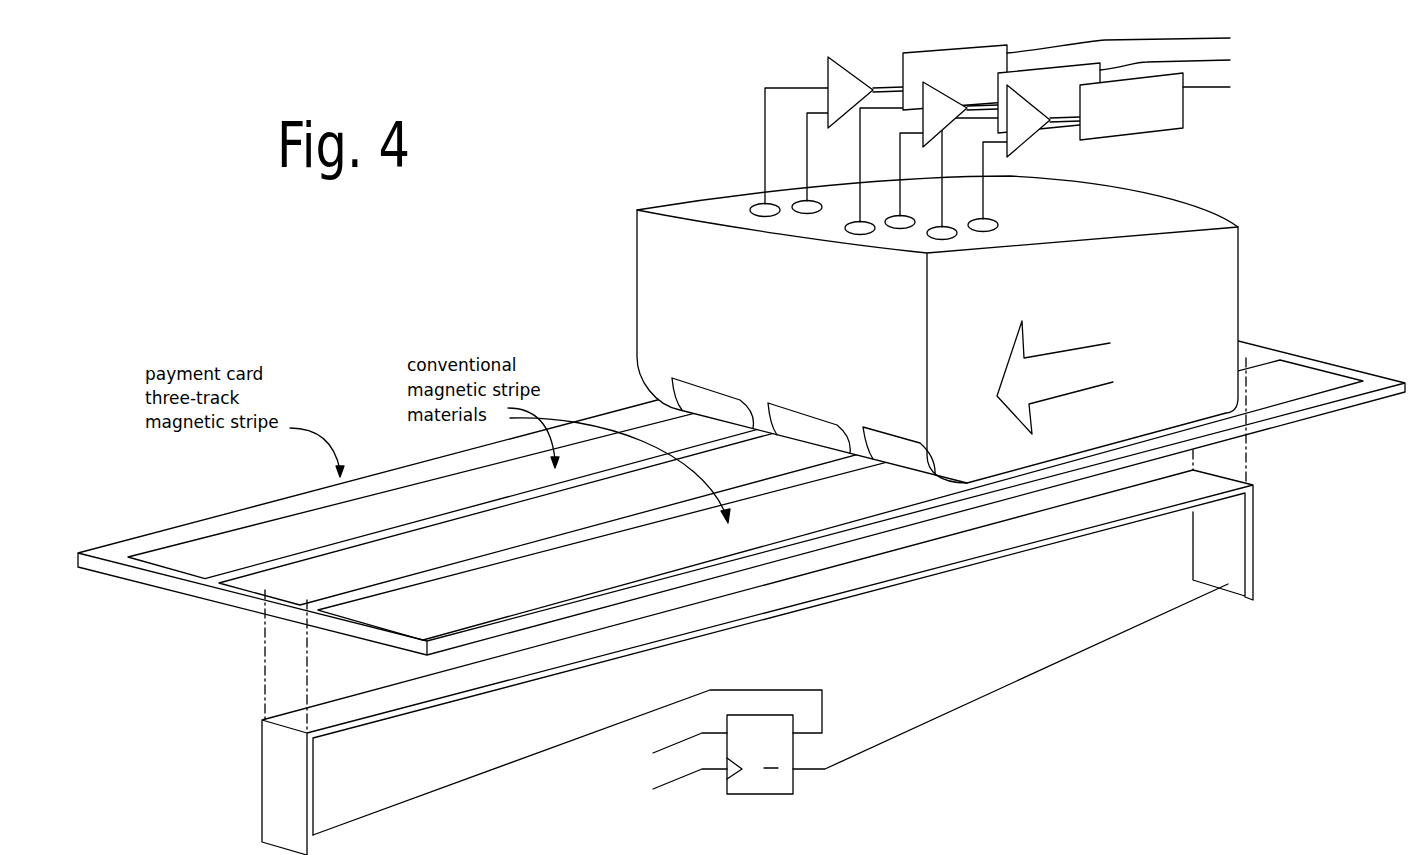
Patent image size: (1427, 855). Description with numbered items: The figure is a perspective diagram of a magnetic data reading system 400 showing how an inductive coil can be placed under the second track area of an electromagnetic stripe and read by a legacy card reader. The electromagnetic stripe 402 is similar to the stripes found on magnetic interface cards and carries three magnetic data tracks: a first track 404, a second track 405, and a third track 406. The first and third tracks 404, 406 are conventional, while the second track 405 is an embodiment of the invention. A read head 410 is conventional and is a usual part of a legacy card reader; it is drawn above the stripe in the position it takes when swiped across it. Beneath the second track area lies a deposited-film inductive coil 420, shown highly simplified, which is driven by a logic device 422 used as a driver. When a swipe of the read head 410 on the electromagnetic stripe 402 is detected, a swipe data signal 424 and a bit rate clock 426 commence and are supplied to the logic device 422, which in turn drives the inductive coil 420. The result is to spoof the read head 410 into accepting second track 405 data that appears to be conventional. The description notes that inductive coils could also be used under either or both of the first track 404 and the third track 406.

The magnetic data reading system 400 is at (640, 124).
The electromagnetic stripe 402 is at (203, 588).
The track-1 404 is at (512, 487).
The track-2 405 is at (610, 517).
The track-3 406 is at (693, 549).
The read head 410 is at (638, 283).
The deposited-film inductive coil 420 is at (886, 596).
The logic device 422 is at (762, 796).
The swipe data signal 424 is at (709, 732).
The bit rate clock 426 is at (715, 774).